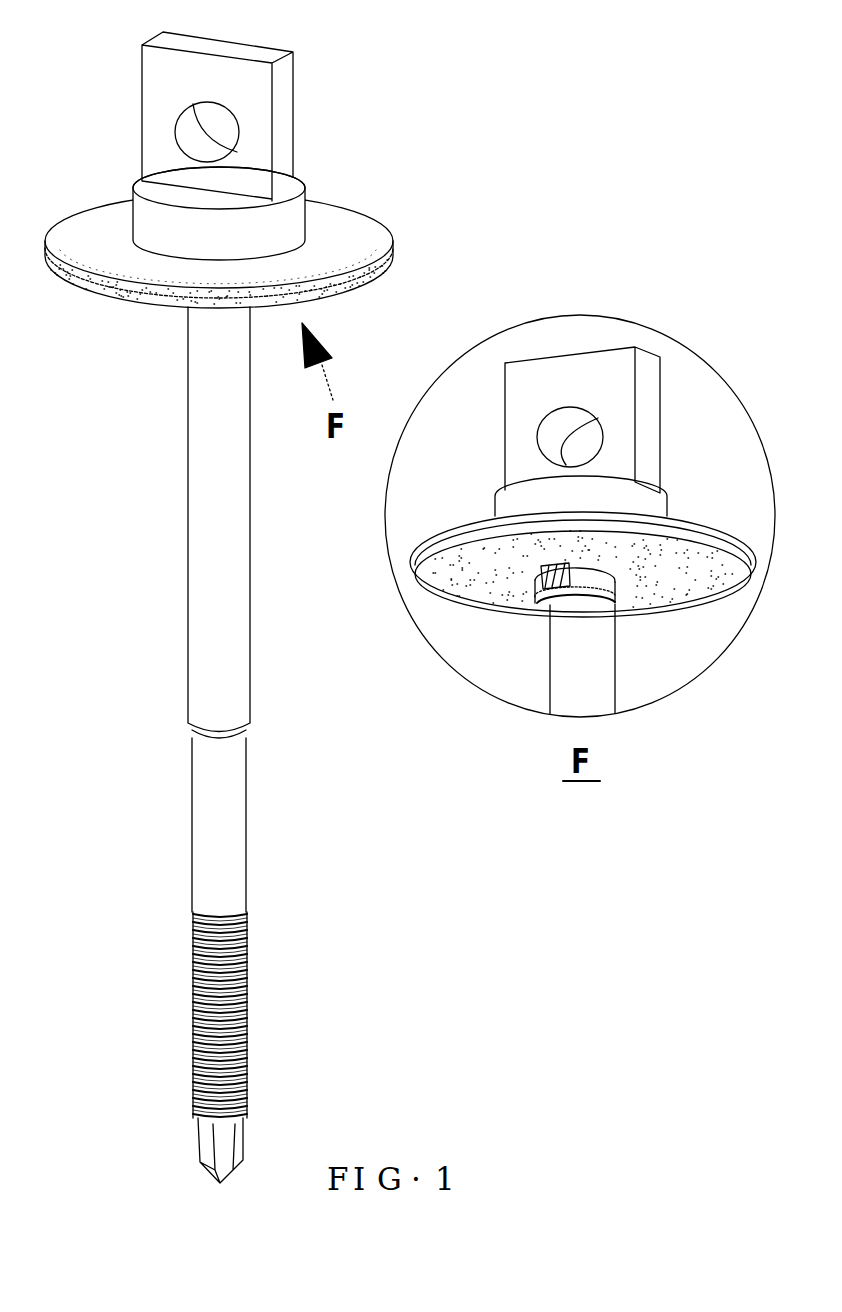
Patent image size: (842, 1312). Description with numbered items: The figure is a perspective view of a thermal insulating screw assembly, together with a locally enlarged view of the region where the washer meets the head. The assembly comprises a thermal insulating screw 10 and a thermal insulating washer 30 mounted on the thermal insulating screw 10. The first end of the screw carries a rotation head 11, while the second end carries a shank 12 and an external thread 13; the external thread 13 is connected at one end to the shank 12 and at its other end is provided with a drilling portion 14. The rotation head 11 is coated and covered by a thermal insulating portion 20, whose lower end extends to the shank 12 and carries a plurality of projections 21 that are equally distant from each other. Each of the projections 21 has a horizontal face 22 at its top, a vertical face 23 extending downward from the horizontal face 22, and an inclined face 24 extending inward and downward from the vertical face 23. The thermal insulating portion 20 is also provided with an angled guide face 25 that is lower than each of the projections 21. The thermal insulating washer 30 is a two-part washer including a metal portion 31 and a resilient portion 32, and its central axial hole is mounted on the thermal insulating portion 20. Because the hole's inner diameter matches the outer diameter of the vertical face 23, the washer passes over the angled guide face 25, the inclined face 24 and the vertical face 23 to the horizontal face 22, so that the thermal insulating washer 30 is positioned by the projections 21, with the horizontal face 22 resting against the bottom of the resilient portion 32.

The thermal insulating screw 10 is at (146, 551).
The rotation head 11 is at (412, 213).
The shank 12 is at (290, 908).
The external thread 13 is at (247, 993).
The drilling portion 14 is at (243, 1138).
The thermal insulating portion 20 is at (153, 84).
The projections 21 is at (542, 590).
The horizontal face 22 is at (624, 574).
The vertical face 23 is at (626, 576).
The inclined face 24 is at (617, 596).
The angled guide face 25 is at (582, 595).
The thermal insulating washer 30 is at (404, 249).
The metal portion 31 is at (98, 228).
The resilient portion 32 is at (139, 286).